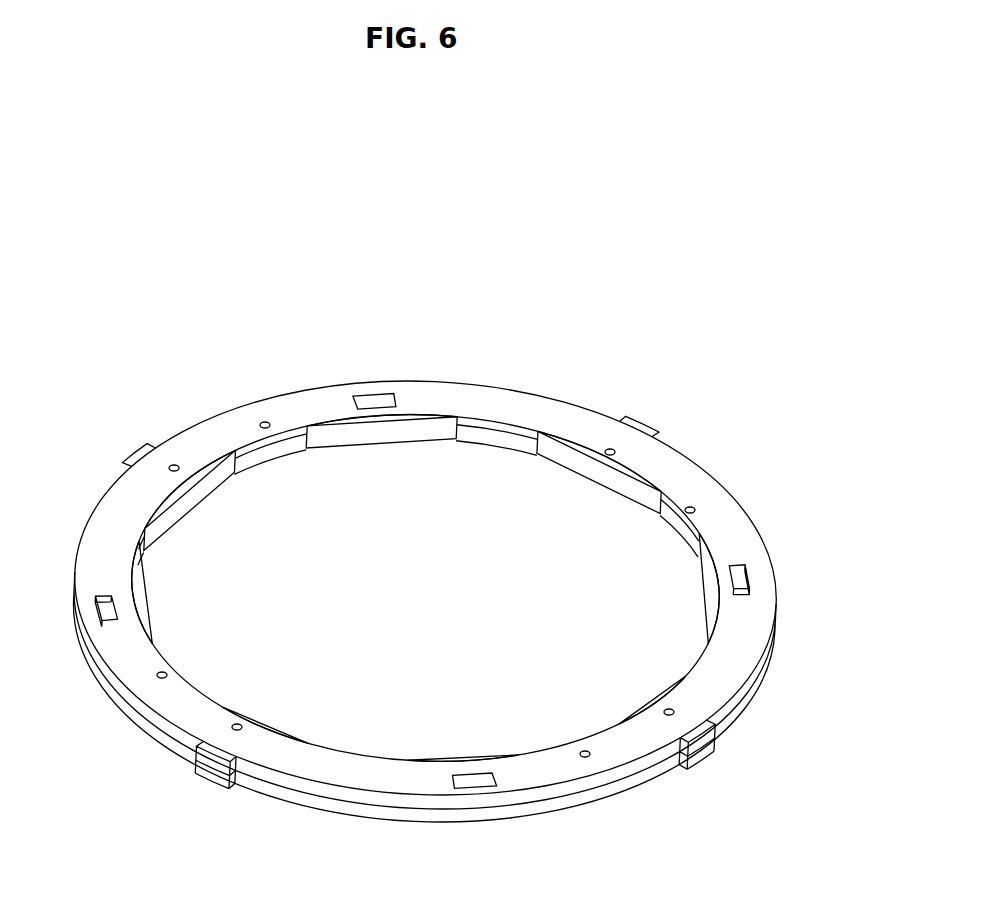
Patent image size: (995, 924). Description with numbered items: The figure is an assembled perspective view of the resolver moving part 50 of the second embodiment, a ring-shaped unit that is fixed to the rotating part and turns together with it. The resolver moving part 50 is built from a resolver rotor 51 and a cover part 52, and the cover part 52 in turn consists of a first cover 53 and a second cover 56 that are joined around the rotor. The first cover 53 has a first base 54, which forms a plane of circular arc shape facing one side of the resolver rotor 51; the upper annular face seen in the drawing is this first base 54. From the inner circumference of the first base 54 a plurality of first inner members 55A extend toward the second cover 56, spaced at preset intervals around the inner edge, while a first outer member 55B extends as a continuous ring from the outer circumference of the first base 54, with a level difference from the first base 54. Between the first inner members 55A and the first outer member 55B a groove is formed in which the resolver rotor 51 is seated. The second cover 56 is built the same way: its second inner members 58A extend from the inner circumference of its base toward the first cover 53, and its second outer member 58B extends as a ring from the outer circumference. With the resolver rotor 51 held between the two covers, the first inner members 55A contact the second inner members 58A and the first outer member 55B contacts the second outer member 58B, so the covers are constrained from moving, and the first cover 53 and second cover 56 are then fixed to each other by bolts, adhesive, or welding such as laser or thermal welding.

The resolver moving part 50 is at (603, 268).
The resolver rotor 51 is at (578, 475).
The cover part 52 is at (380, 549).
The first cover 53 is at (390, 442).
The first base 54 is at (524, 408).
The first inner members 55A is at (478, 428).
The first outer member 55B is at (283, 780).
The second cover 56 is at (143, 763).
The second inner members 58A is at (503, 447).
The second outer member 58B is at (330, 805).